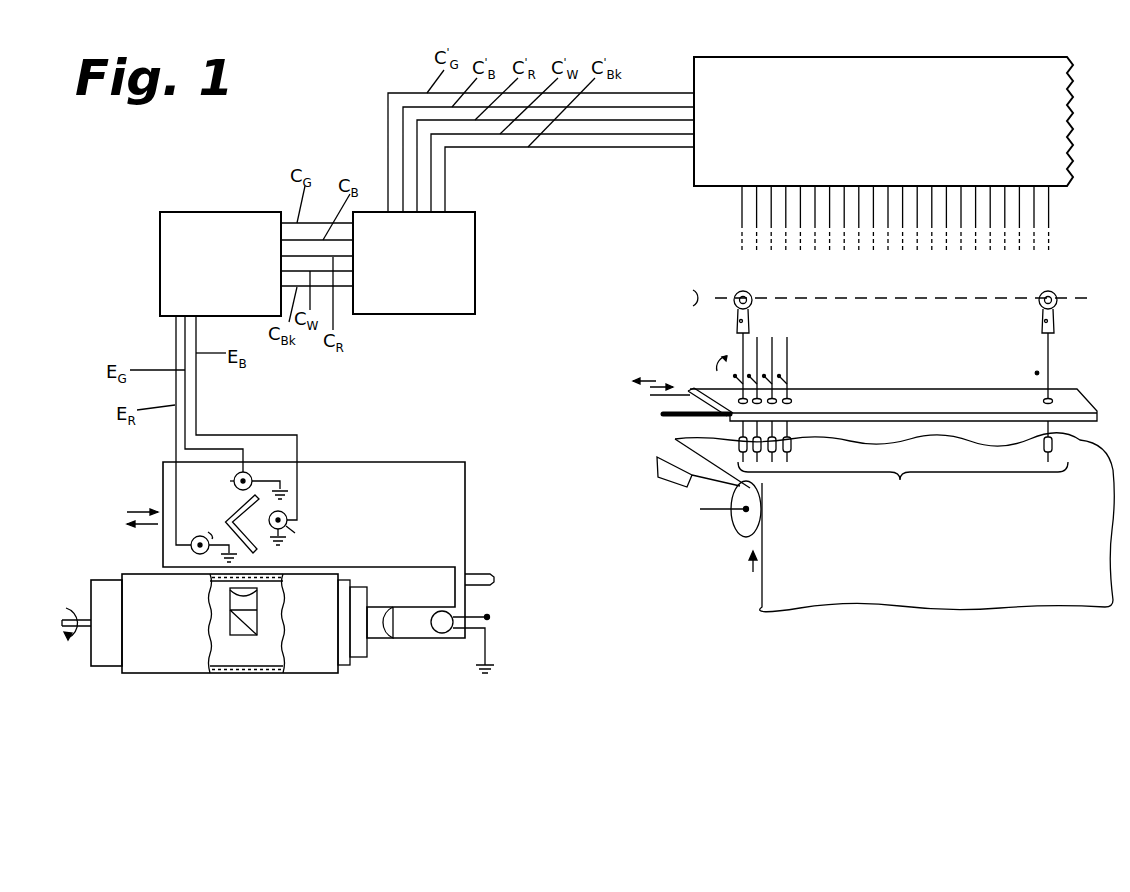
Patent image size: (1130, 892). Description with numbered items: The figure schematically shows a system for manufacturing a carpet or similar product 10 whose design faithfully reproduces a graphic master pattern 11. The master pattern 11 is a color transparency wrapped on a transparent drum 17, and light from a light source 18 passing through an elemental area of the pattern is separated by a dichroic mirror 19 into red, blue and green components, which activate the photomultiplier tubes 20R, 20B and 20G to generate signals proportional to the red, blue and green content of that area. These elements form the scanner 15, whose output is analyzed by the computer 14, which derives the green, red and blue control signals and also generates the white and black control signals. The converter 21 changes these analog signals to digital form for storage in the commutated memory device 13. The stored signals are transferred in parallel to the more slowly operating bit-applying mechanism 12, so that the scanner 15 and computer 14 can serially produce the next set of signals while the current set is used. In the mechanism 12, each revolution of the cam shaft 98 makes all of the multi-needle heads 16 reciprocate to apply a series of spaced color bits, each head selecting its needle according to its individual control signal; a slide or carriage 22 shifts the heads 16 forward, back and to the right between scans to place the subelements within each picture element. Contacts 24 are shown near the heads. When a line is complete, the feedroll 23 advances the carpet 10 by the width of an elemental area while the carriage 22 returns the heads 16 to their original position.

The manufactured product 10 is at (782, 588).
The master pattern 11 is at (170, 663).
The bit-applying mechanism 12 is at (712, 345).
The commutated memory device 13 is at (893, 57).
The computer 14 is at (160, 259).
The scanner 15 is at (163, 475).
The needle heads 16 is at (793, 447).
The transparent drum 17 is at (100, 647).
The light source 18 is at (441, 633).
The dichroic mirror 19 is at (233, 512).
The photomultiplier tube 20G is at (248, 473).
The photomultiplier tube 20B is at (285, 515).
The photomultiplier tube 20R is at (191, 548).
The converter 21 is at (477, 260).
The slide 22 is at (1070, 398).
The feedroll 23 is at (730, 512).
The contacts 24 is at (735, 383).
The cam shaft 98 is at (683, 296).